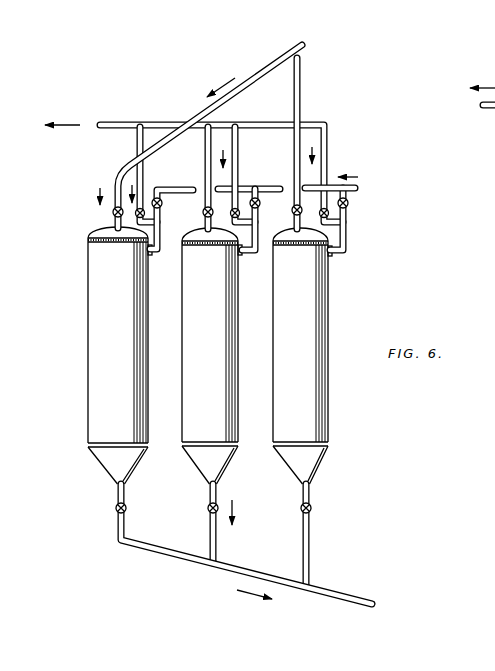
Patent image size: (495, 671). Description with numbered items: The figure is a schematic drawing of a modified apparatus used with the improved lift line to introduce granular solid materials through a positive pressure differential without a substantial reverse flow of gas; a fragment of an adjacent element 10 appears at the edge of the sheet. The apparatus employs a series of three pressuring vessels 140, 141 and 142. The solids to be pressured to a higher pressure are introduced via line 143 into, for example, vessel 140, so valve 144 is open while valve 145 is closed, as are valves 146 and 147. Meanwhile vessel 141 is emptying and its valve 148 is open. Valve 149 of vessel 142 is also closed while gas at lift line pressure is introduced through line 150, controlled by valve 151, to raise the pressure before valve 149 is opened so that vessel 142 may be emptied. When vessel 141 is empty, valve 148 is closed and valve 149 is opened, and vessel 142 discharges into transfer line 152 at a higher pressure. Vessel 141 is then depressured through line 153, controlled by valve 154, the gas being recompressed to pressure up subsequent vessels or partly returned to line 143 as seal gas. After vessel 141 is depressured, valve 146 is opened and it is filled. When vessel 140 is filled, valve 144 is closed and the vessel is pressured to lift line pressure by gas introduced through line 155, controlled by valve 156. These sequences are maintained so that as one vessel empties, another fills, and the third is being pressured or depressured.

The pressuring vessel 140 is at (116, 328).
The pressuring vessel 141 is at (206, 433).
The pressuring vessel 142 is at (287, 412).
The line 143 is at (300, 60).
The valve 144 is at (112, 212).
The valve 145 is at (115, 509).
The valve 146 is at (203, 212).
The valve 147 is at (292, 211).
The valve 148 is at (207, 509).
The valve 149 is at (312, 507).
The line 150 is at (356, 188).
The valve 151 is at (349, 203).
The transfer line 152 is at (166, 565).
The line 153 is at (238, 138).
The valve 154 is at (232, 220).
The line 155 is at (158, 252).
The valve 156 is at (188, 168).
The adjacent figure fragment 10 is at (490, 112).